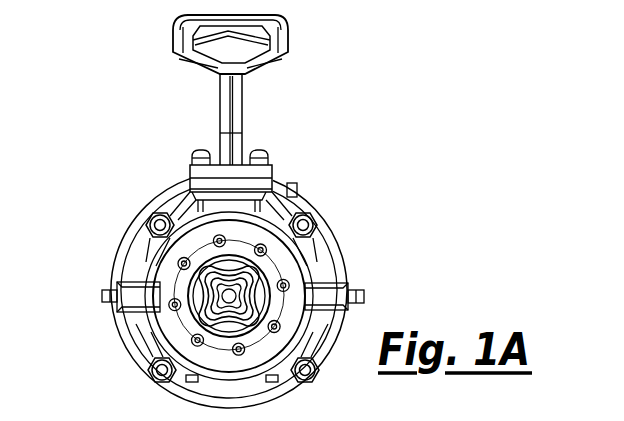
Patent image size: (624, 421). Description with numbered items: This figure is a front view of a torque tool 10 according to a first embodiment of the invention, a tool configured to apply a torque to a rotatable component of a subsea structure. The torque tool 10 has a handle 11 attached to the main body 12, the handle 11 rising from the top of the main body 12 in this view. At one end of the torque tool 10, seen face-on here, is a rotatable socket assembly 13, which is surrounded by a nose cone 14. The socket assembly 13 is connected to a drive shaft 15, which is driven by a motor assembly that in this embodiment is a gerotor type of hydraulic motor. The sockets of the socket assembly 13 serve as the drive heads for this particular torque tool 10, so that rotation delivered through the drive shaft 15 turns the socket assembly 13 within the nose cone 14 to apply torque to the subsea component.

The torque tool 10 is at (86, 160).
The handle 11 is at (289, 31).
The main body 12 is at (257, 182).
The rotatable socket assembly 13 is at (240, 291).
The nose cone 14 is at (170, 325).
The drive shaft 15 is at (232, 297).